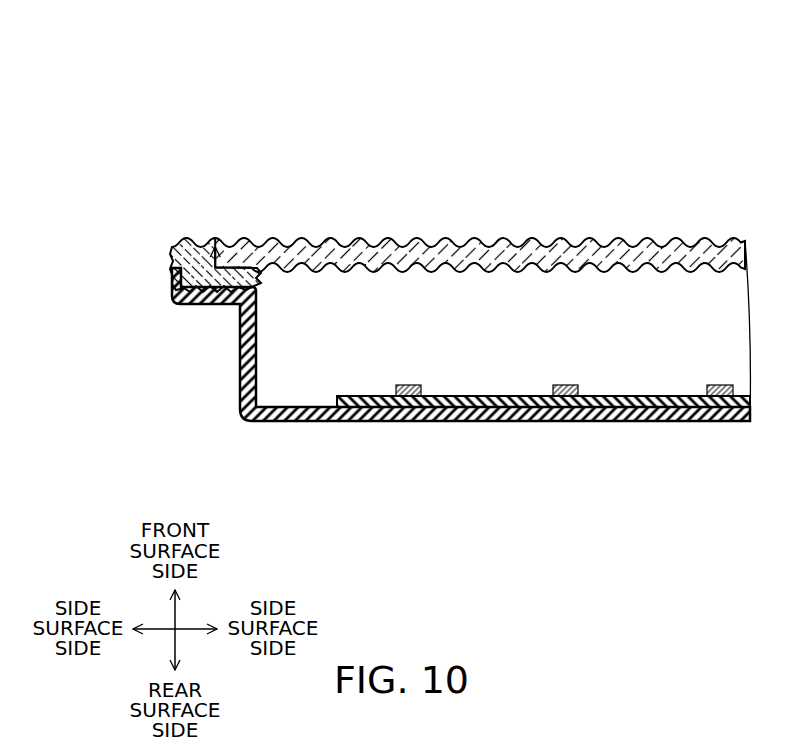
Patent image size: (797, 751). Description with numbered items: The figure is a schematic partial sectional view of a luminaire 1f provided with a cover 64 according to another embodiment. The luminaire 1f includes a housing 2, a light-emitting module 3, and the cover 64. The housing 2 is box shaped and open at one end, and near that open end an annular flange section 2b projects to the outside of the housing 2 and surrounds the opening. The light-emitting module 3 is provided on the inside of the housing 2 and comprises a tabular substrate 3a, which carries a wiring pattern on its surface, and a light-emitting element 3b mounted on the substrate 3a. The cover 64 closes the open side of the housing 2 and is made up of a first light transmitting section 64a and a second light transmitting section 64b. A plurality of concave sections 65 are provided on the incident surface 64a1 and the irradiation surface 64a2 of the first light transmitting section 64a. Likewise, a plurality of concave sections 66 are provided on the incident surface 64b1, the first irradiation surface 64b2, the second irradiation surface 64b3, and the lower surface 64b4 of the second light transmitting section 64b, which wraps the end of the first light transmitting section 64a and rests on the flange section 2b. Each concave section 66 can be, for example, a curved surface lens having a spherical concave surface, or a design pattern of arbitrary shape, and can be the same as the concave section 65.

The luminaire 1f is at (672, 98).
The housing 2 is at (247, 433).
The flange section 2b is at (191, 302).
The light-emitting module 3 is at (543, 455).
The substrate 3a is at (529, 407).
The light-emitting element 3b is at (566, 397).
The cover 64 is at (388, 298).
The first light transmitting section 64a is at (363, 238).
The incident surface 64a1 is at (480, 275).
The irradiation surface 64a2 is at (590, 236).
The second light transmitting section 64b is at (213, 243).
The incident surface 64b1 is at (260, 289).
The first irradiation surface 64b2 is at (195, 240).
The second irradiation surface 64b3 is at (165, 262).
The lower surface 64b4 is at (204, 300).
The concave section 65 is at (665, 240).
The concave section 66 is at (180, 242).